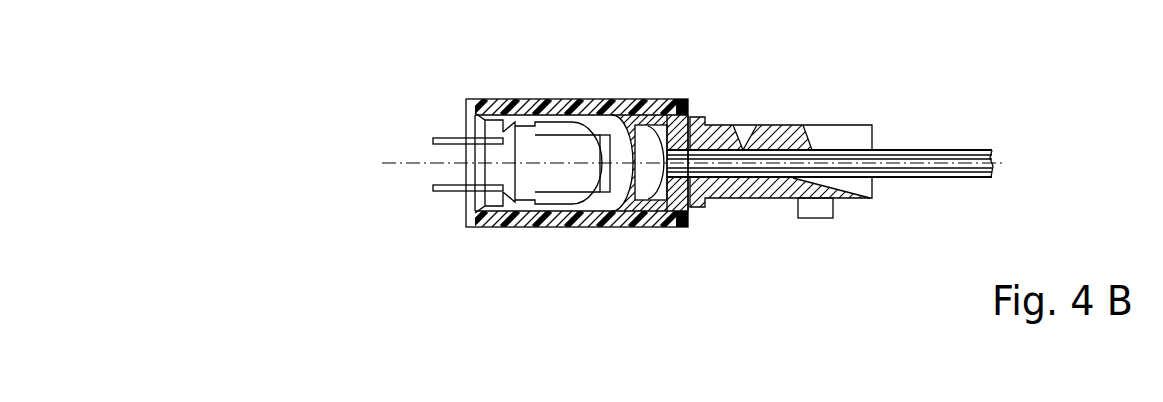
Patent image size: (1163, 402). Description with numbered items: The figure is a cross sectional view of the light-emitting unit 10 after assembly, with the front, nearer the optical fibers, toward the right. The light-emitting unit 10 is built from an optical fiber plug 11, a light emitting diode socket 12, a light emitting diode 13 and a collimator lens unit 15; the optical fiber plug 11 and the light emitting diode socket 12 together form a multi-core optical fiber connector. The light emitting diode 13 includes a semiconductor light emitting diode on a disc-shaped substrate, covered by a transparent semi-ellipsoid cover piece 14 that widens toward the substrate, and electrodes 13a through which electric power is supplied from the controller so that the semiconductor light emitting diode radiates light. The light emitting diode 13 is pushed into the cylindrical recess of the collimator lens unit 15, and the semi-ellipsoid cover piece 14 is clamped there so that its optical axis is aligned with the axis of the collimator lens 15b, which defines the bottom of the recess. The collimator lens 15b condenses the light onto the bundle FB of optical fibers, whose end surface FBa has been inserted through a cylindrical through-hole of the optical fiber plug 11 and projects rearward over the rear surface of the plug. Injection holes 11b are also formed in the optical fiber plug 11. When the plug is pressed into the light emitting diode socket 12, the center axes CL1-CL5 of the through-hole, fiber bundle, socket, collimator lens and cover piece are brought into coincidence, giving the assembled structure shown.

The light-emitting unit 10 is at (461, 93).
The optical fiber plug 11 is at (774, 204).
The injection holes 11b is at (749, 127).
The light emitting diode socket 12 is at (551, 236).
The light emitting diode 13 is at (493, 231).
The electrodes 13a is at (447, 148).
The semi-ellipsoid cover piece 14 is at (555, 148).
The collimator lens unit 15 is at (622, 205).
The collimator lens 15b is at (652, 126).
The bundle of optical fibers FB is at (952, 179).
The end surface of the bundle of optical fibers FBa is at (663, 204).
The center axes CL1-CL5 is at (905, 162).